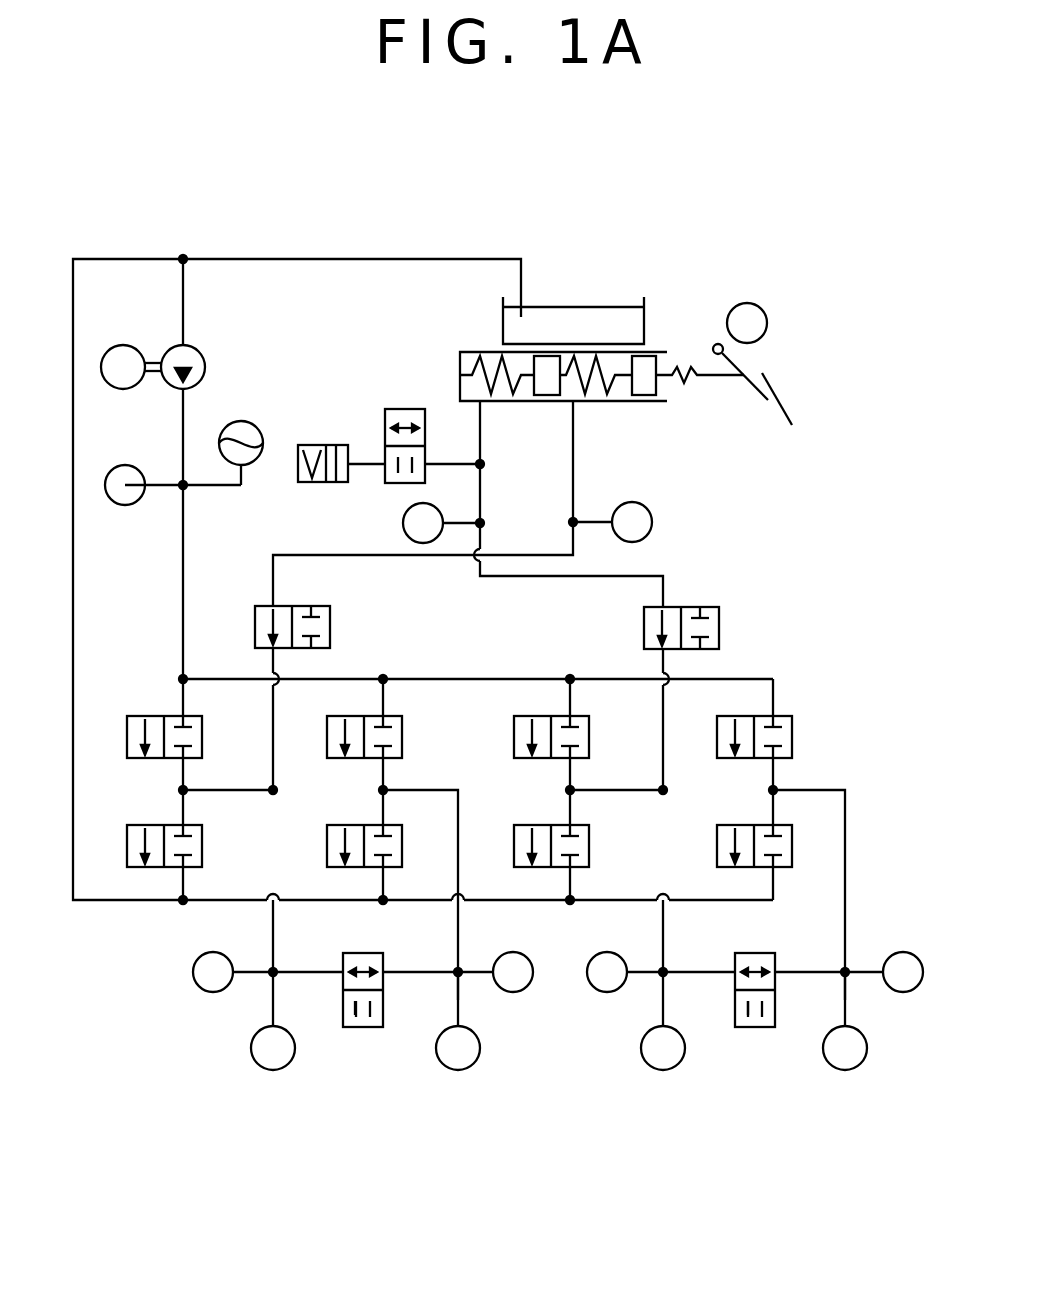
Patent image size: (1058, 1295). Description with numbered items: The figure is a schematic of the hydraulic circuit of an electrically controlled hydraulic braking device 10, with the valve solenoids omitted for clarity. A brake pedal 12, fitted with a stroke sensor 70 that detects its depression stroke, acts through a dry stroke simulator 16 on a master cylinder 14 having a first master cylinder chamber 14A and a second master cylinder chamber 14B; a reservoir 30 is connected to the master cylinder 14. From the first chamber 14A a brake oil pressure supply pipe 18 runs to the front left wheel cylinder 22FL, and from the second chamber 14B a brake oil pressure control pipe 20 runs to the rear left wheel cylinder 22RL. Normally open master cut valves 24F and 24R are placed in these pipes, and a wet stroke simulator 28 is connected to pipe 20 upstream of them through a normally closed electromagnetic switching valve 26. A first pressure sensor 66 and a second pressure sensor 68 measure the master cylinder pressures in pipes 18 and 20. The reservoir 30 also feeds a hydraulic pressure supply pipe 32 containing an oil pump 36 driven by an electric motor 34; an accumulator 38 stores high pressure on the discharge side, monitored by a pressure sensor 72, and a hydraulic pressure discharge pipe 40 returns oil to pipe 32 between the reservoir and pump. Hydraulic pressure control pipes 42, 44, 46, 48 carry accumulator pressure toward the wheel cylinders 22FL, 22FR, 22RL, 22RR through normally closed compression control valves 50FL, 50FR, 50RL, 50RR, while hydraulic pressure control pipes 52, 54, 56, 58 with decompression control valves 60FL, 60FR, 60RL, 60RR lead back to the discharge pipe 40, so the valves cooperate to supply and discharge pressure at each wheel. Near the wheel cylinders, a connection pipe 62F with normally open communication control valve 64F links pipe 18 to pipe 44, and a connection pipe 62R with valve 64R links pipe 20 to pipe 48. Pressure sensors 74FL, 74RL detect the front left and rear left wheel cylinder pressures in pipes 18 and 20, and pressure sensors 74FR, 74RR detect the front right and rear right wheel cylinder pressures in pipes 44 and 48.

The electrically controlled hydraulic braking device 10 is at (671, 253).
The brake pedal 12 is at (790, 406).
The master cylinder 14 is at (488, 350).
The first master cylinder chamber 14A is at (597, 396).
The second master cylinder chamber 14B is at (503, 396).
The dry stroke simulator 16 is at (688, 382).
The brake oil pressure supply pipe 18 is at (576, 465).
The brake oil pressure control pipe 20 is at (482, 490).
The wheel cylinder 22FL is at (270, 1072).
The wheel cylinder 22FR is at (455, 1072).
The wheel cylinder 22RL is at (660, 1072).
The wheel cylinder 22RR is at (843, 1072).
The electromagnetic switching valve 24F is at (331, 627).
The electromagnetic switching valve 24R is at (720, 627).
The electromagnetic switching valve 26 is at (407, 409).
The wet stroke simulator 28 is at (304, 483).
The reservoir 30 is at (570, 306).
The hydraulic pressure supply pipe 32 is at (316, 262).
The electric motor 34 is at (127, 345).
The oil pump 36 is at (205, 360).
The accumulator 38 is at (262, 433).
The hydraulic pressure discharge pipe 40 is at (74, 620).
The hydraulic pressure control pipe 42 is at (231, 788).
The hydraulic pressure control pipe 44 is at (429, 788).
The hydraulic pressure control pipe 46 is at (619, 788).
The hydraulic pressure control pipe 48 is at (847, 878).
The electromagnetic switching valve 50FL is at (126, 738).
The electromagnetic switching valve 50FR is at (328, 740).
The electromagnetic switching valve 50RL is at (514, 740).
The electromagnetic switching valve 50RR is at (718, 740).
The hydraulic pressure control pipe 52 is at (186, 887).
The hydraulic pressure control pipe 54 is at (385, 887).
The hydraulic pressure control pipe 56 is at (574, 887).
The hydraulic pressure control pipe 58 is at (775, 882).
The electromagnetic switching valve 60FL is at (126, 846).
The electromagnetic switching valve 60FR is at (326, 848).
The electromagnetic switching valve 60RL is at (512, 848).
The electromagnetic switching valve 60RR is at (716, 848).
The connection pipe 62F is at (306, 972).
The connection pipe 62R is at (696, 972).
The electromagnetic switching valve 64F is at (360, 1028).
The electromagnetic switching valve 64R is at (752, 1028).
The first pressure sensor 66 is at (652, 522).
The second pressure sensor 68 is at (403, 523).
The stroke sensor 70 is at (768, 322).
The pressure sensor 72 is at (124, 505).
The pressure sensor 74FL is at (198, 978).
The pressure sensor 74FR is at (520, 962).
The pressure sensor 74RL is at (592, 978).
The pressure sensor 74RR is at (904, 952).